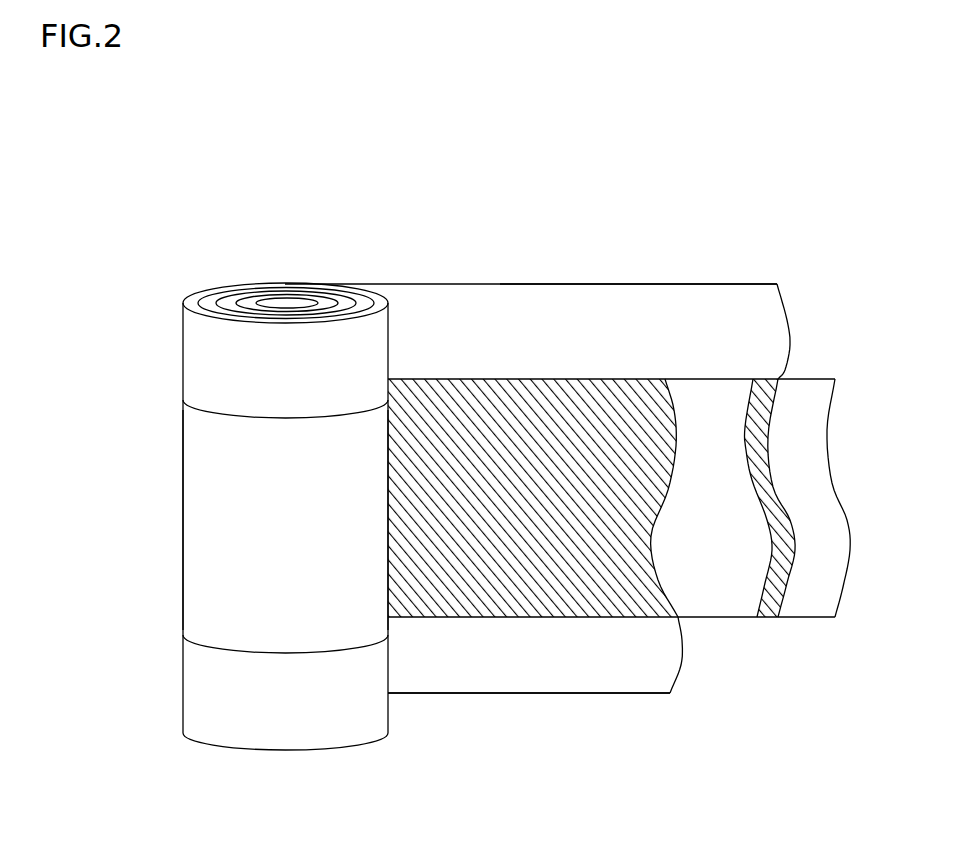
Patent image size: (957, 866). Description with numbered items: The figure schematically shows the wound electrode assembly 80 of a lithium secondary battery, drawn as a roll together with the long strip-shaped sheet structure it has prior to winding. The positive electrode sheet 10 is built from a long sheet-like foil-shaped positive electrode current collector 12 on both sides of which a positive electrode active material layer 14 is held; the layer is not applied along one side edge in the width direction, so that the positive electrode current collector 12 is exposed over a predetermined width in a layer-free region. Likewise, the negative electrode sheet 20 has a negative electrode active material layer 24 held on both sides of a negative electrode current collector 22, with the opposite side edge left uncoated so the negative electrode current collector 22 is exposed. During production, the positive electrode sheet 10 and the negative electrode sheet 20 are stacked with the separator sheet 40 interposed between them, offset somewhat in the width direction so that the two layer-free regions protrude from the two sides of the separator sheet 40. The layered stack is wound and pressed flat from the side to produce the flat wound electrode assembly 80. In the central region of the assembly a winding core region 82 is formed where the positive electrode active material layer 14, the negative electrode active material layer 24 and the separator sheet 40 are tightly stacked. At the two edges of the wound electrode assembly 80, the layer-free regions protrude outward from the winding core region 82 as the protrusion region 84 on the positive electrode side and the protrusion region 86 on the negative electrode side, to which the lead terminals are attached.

The positive electrode sheet 10 is at (497, 284).
The positive electrode current collector 12 is at (742, 300).
The positive electrode active material layer 14 is at (768, 372).
The negative electrode sheet 20 is at (428, 695).
The negative electrode current collector 22 is at (508, 675).
The negative electrode active material layer 24 is at (625, 618).
The separator sheet 40 is at (700, 592).
The wound electrode assembly 80 is at (183, 268).
The winding core region 82 is at (203, 518).
The protrusion region 84 is at (203, 367).
The protrusion region 86 is at (203, 693).